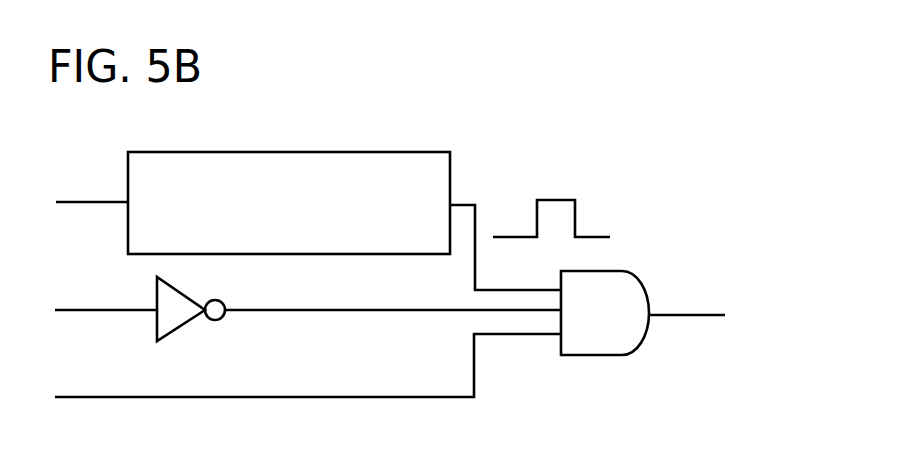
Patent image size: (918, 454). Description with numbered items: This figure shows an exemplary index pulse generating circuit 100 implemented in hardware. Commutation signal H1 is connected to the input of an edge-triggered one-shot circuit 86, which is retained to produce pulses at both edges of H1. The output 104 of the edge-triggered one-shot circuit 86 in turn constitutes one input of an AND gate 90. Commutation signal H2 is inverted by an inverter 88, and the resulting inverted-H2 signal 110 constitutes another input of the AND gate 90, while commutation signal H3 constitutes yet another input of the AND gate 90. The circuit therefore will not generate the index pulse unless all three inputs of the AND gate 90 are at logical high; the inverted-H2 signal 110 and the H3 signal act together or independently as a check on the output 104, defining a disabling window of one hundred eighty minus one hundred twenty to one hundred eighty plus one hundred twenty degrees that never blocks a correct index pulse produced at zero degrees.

The edge-triggered one-shot circuit 86 is at (320, 152).
The inverter 88 is at (189, 296).
The AND gate 90 is at (628, 270).
The index pulse generating circuit 100 is at (632, 142).
The output of the edge-triggered one-shot circuit 104 is at (508, 289).
The inverted-H2 signal 110 is at (343, 309).